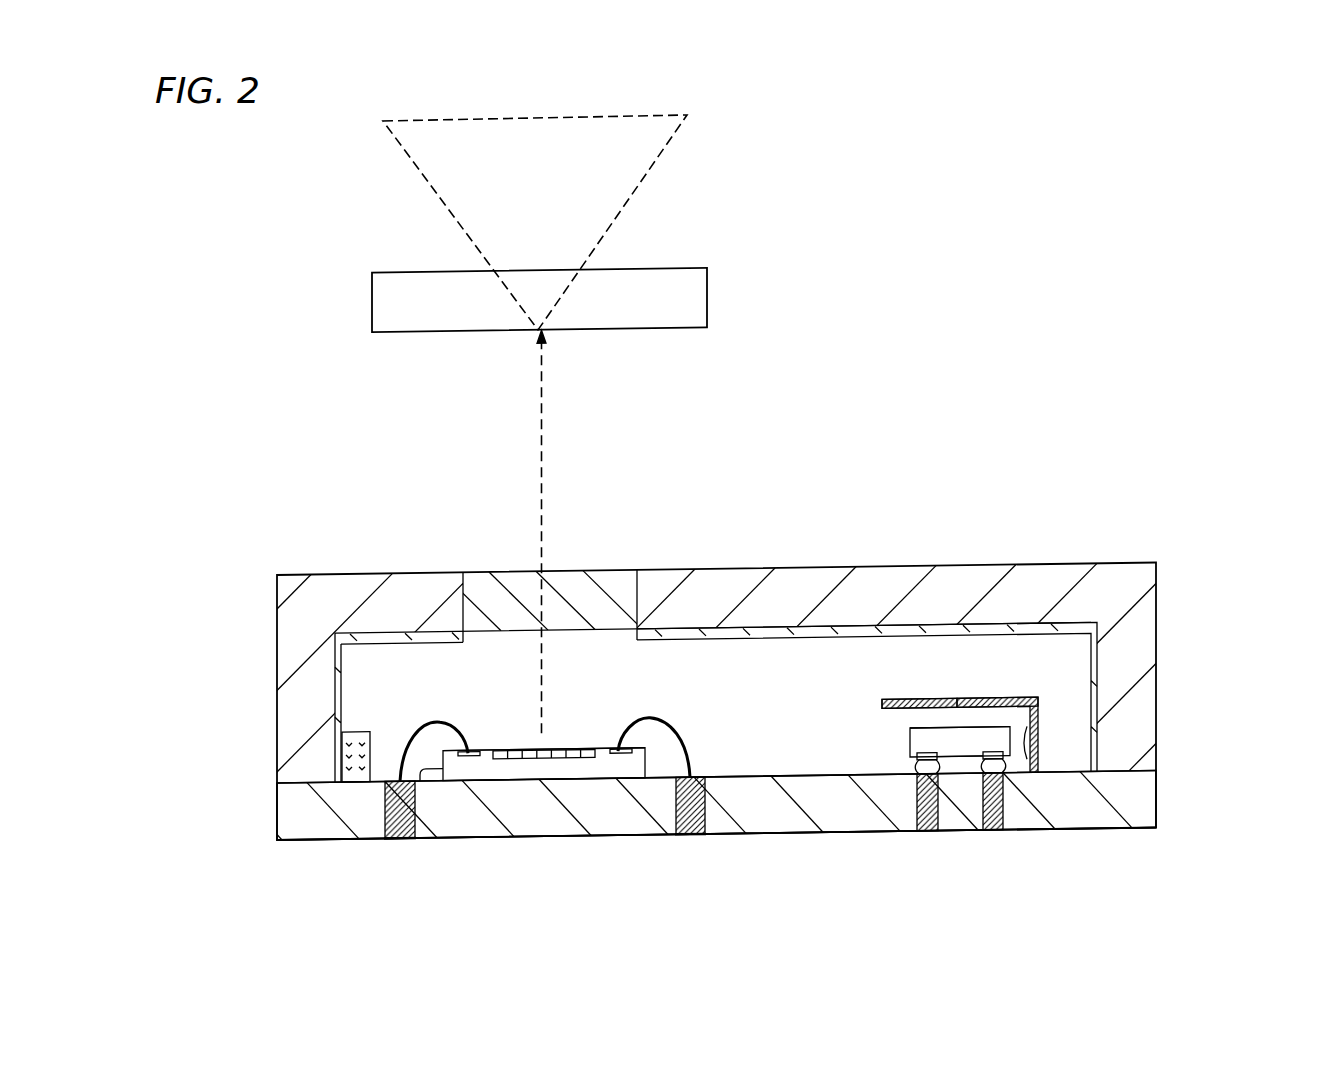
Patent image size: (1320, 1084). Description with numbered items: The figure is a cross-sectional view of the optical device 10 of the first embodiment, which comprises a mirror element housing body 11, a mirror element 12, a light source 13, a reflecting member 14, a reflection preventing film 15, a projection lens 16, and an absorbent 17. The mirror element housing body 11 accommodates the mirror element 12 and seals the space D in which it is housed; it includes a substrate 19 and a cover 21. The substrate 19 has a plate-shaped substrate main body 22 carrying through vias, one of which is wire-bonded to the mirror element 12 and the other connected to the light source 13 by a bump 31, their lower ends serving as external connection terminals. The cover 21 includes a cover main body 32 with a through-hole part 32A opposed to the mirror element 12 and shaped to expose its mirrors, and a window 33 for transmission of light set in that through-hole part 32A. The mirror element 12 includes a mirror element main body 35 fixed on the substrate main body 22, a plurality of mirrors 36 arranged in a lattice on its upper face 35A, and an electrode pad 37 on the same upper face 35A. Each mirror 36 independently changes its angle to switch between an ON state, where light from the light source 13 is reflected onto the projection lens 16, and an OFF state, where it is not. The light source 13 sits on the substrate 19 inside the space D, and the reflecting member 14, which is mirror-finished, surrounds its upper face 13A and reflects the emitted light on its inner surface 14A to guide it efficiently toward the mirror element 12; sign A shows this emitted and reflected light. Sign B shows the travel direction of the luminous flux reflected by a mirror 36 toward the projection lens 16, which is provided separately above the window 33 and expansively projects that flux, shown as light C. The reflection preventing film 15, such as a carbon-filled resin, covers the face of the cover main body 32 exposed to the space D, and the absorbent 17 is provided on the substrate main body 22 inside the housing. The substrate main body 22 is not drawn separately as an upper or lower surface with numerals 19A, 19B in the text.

The optical device 10 is at (292, 158).
The mirror element housing body 11 is at (1228, 706).
The mirror element 12 is at (577, 786).
The light source 13 is at (958, 727).
The upper face of the light source 13A is at (976, 737).
The reflecting member 14 is at (910, 760).
The inner surface of the reflecting member 14A is at (1013, 717).
The reflection preventing film 15 is at (722, 634).
The projection lens 16 is at (708, 302).
The absorbent 17 is at (352, 784).
The substrate 19 is at (1175, 781).
The upper surface of substrate 19A is at (438, 783).
The lower surface of substrate 19B is at (300, 845).
The cover 21 is at (1168, 725).
The substrate main body 22 is at (813, 822).
The bump 31 is at (985, 775).
The cover main body 32 is at (1115, 580).
The through-hole part 32A is at (633, 603).
The window for transmission of light 33 is at (489, 610).
The mirror element main body 35 is at (503, 776).
The upper face of the mirror element main body 35A is at (603, 750).
The mirrors 36 is at (530, 763).
The electrode pad 37 is at (618, 758).
The light travel direction A is at (828, 744).
The luminous flux travel direction B is at (548, 439).
The projected light C is at (655, 183).
The space D is at (828, 715).